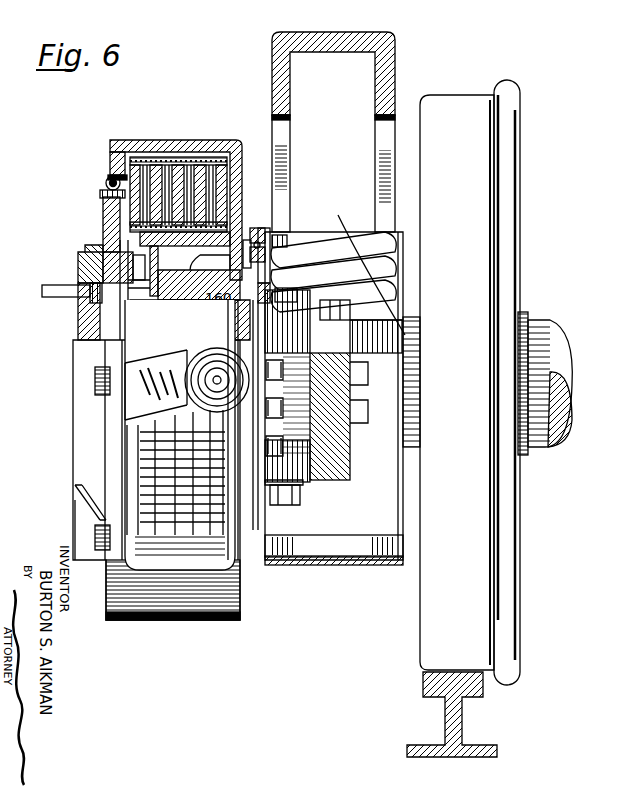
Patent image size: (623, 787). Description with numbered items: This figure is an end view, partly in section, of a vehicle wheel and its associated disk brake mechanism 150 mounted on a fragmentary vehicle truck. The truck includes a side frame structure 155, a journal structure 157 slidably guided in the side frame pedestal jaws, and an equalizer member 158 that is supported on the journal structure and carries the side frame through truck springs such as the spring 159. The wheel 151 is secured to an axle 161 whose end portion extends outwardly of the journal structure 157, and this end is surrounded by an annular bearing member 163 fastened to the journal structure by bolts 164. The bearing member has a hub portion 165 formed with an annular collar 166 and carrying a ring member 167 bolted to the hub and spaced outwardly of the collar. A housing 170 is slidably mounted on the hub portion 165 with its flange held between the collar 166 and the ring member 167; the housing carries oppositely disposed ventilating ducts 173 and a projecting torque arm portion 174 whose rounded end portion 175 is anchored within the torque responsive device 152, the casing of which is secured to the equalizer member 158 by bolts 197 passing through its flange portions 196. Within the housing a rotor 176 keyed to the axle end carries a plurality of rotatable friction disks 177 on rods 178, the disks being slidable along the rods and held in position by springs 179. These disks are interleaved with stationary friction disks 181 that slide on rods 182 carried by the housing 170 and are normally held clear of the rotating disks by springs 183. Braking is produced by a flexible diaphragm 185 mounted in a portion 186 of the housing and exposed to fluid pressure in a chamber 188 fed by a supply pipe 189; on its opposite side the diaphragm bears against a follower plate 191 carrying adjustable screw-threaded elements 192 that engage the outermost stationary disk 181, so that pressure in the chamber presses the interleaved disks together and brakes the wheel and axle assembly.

The brake mechanism 150 is at (187, 628).
The wheel 151 is at (480, 602).
The torque responsive device 152 is at (304, 504).
The side frame structure 155 is at (390, 70).
The journal structure 157 is at (385, 520).
The equalizer member 158 is at (345, 340).
The truck spring 159 is at (383, 262).
The axle 161 is at (540, 440).
The annular bearing member 163 is at (268, 300).
The bolts 164 is at (260, 285).
The hub portion 165 is at (260, 245).
The annular collar 166 is at (248, 262).
The ring member 167 is at (130, 268).
The housing 170 is at (135, 140).
The ventilating ducts 173 is at (125, 512).
The torque arm portion 174 is at (145, 392).
The rounded end portion 175 is at (200, 378).
The rotor 176 is at (150, 310).
The friction disks 177 is at (178, 155).
The rods 178 is at (140, 230).
The springs 179 is at (140, 246).
The stationary friction disks 181 is at (130, 168).
The rods 182 is at (118, 140).
The springs 183 is at (205, 155).
The flexible diaphragm 185 is at (100, 300).
The housing portion 186 is at (78, 272).
The chamber 188 is at (92, 290).
The supply pipe 189 is at (41, 295).
The follower plate 191 is at (90, 256).
The adjustable screw-threaded elements 192 is at (105, 193).
The flange portions 196 is at (300, 435).
The bolts 197 is at (283, 420).